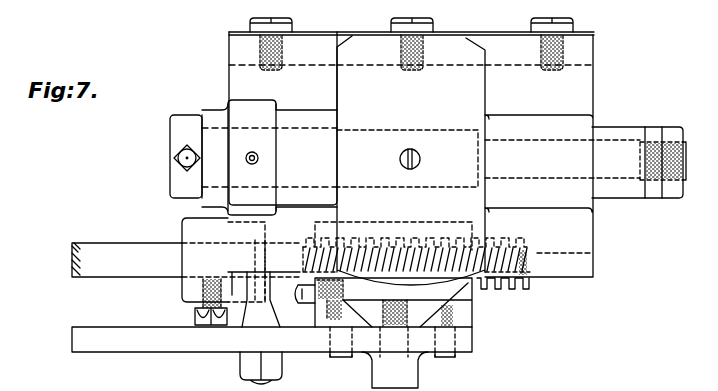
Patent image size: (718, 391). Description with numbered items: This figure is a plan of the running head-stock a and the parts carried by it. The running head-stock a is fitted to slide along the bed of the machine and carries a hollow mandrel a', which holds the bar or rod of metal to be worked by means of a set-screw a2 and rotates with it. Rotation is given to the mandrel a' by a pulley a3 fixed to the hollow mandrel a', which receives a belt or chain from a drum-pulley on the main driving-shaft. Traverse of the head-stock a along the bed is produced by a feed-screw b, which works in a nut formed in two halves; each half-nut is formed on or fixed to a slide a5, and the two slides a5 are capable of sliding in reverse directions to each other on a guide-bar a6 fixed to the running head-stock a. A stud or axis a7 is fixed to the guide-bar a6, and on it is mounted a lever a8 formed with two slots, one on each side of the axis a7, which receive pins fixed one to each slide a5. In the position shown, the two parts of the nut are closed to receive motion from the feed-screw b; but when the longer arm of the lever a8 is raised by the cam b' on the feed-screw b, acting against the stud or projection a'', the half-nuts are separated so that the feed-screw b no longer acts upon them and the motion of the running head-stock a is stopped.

The running head-stock a is at (434, 147).
The hollow mandrel a' is at (428, 182).
The set-screw a2 is at (176, 160).
The pulley a3 is at (411, 160).
The slide a5 is at (411, 289).
The guide-bar a6 is at (404, 313).
The stud or axis a7 is at (269, 157).
The lever a8 is at (272, 357).
The stud or projection a'' is at (261, 283).
The feed-screw b is at (305, 271).
The cam b' is at (241, 271).